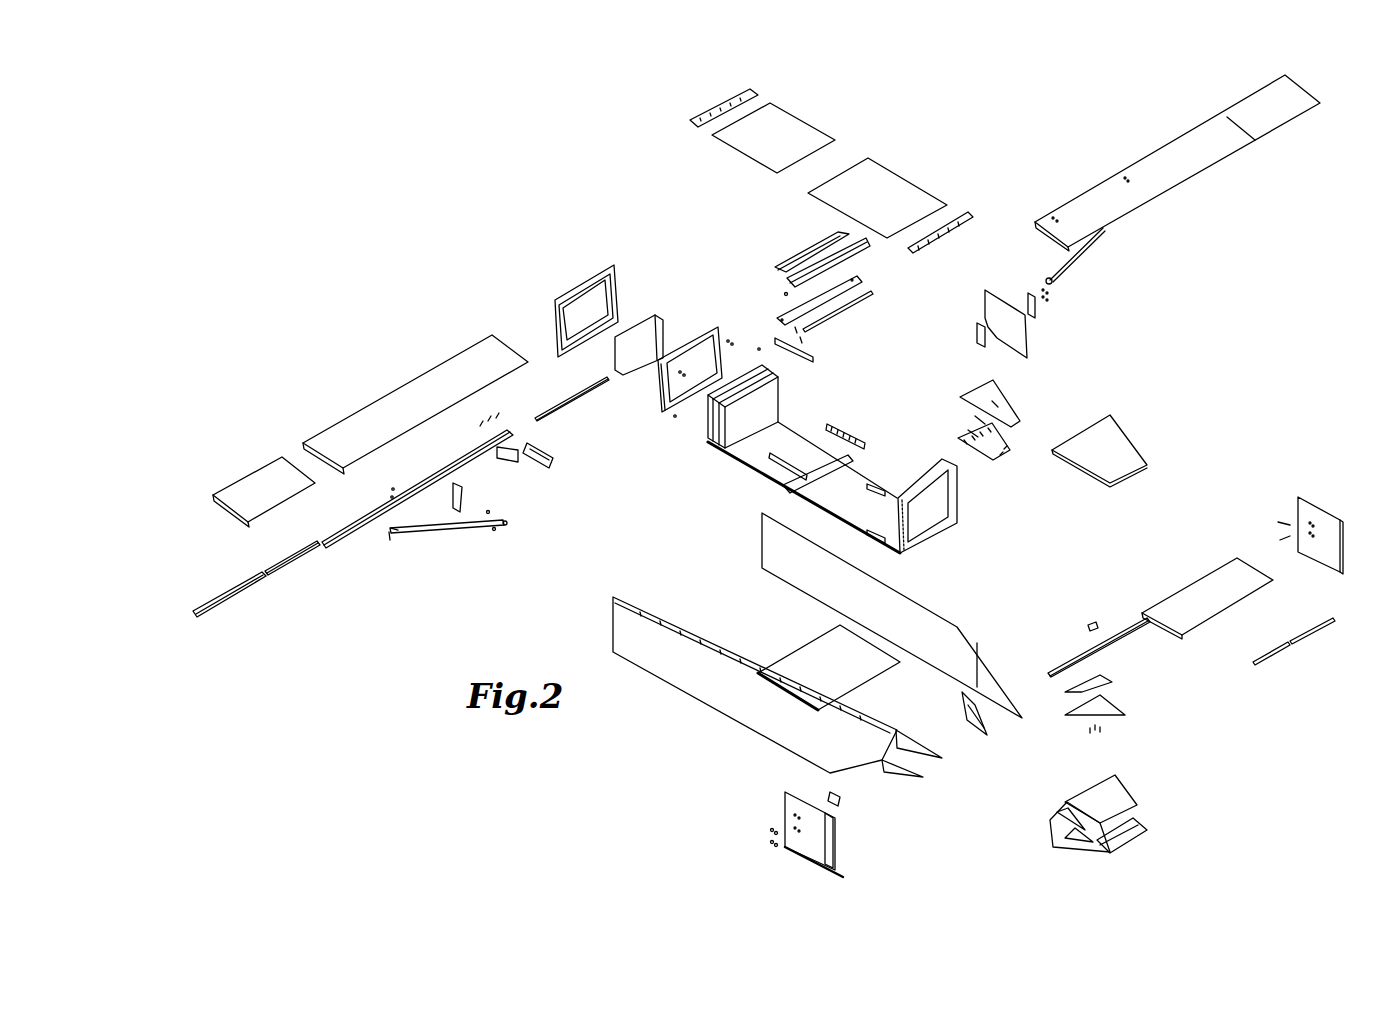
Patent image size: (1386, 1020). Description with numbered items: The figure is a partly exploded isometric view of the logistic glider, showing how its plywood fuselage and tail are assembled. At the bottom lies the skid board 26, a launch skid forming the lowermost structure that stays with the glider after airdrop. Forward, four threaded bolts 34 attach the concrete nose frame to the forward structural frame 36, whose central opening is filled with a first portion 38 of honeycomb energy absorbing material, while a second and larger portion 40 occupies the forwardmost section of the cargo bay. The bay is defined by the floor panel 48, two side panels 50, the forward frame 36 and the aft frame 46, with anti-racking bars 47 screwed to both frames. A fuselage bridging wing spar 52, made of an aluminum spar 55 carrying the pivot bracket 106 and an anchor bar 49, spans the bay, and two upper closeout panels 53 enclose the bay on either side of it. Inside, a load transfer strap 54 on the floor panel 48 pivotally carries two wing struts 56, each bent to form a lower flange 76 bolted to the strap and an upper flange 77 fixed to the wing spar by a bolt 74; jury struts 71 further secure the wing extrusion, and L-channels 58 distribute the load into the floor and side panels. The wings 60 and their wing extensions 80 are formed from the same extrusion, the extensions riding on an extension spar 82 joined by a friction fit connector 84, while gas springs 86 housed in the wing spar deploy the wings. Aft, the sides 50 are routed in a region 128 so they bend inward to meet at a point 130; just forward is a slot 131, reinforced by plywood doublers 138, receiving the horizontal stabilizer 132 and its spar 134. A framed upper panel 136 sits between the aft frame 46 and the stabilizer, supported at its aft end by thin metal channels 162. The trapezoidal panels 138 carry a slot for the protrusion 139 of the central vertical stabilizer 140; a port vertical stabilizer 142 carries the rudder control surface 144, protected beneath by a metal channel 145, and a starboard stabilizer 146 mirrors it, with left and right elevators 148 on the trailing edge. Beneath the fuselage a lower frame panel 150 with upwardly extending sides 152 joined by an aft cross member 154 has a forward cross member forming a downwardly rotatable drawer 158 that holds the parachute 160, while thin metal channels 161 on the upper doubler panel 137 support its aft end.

The skid board 26 is at (803, 648).
The threaded bolts 34 is at (618, 266).
The forward structural frame 36 is at (660, 412).
The first portion of energy absorbing material 38 is at (655, 318).
The second portion of energy absorbing material 40 is at (778, 395).
The aft frame 46 is at (930, 520).
The anti-racking bars 47 is at (940, 240).
The floor panel 48 is at (735, 458).
The anchor bar 49 is at (847, 318).
The side panels 50 is at (928, 607).
The fuselage bridging wing spar 52 is at (860, 282).
The upper closeout panels 53 is at (798, 123).
The load transfer strap 54 is at (818, 456).
The aluminum spar 55 is at (785, 296).
The wing struts 56 is at (445, 537).
The L-channels 58 is at (847, 432).
The wings 60 is at (401, 386).
The jury struts 71 is at (462, 500).
The bolt 74 is at (390, 542).
The lower flange 76 is at (1053, 283).
The upper flange 77 is at (388, 530).
The wing extensions 80 is at (246, 478).
The extension spar 82 is at (228, 618).
The friction fit connector 84 is at (296, 575).
The gas springs 86 is at (583, 398).
The pivot bracket 106 is at (512, 460).
The routed region 128 is at (963, 627).
The meeting point 130 is at (1022, 718).
The slot 131 is at (990, 687).
The horizontal stabilizer 132 is at (1192, 585).
The horizontal stabilizer spar 134 is at (1086, 630).
The framed upper panel 136 is at (1125, 440).
The upper doubler panel 137 is at (1068, 712).
The plywood doublers 138 is at (1008, 405).
The protrusion 139 is at (997, 337).
The vertical stabilizer 140 is at (1007, 300).
The port vertical stabilizer 142 is at (800, 858).
The rudder control surface 144 is at (833, 833).
The metal channel 145 is at (843, 877).
The starboard stabilizer 146 is at (1320, 505).
The elevators 148 is at (1268, 668).
The lower frame panel 150 is at (1137, 838).
The upwardly extending sides 152 is at (1118, 778).
The aft cross member 154 is at (1135, 825).
The downwardly rotatable drawer 158 is at (1096, 803).
The parachute 160 is at (1100, 795).
The thin metal channels 161 is at (1092, 675).
The thin metal channels 162 is at (973, 420).